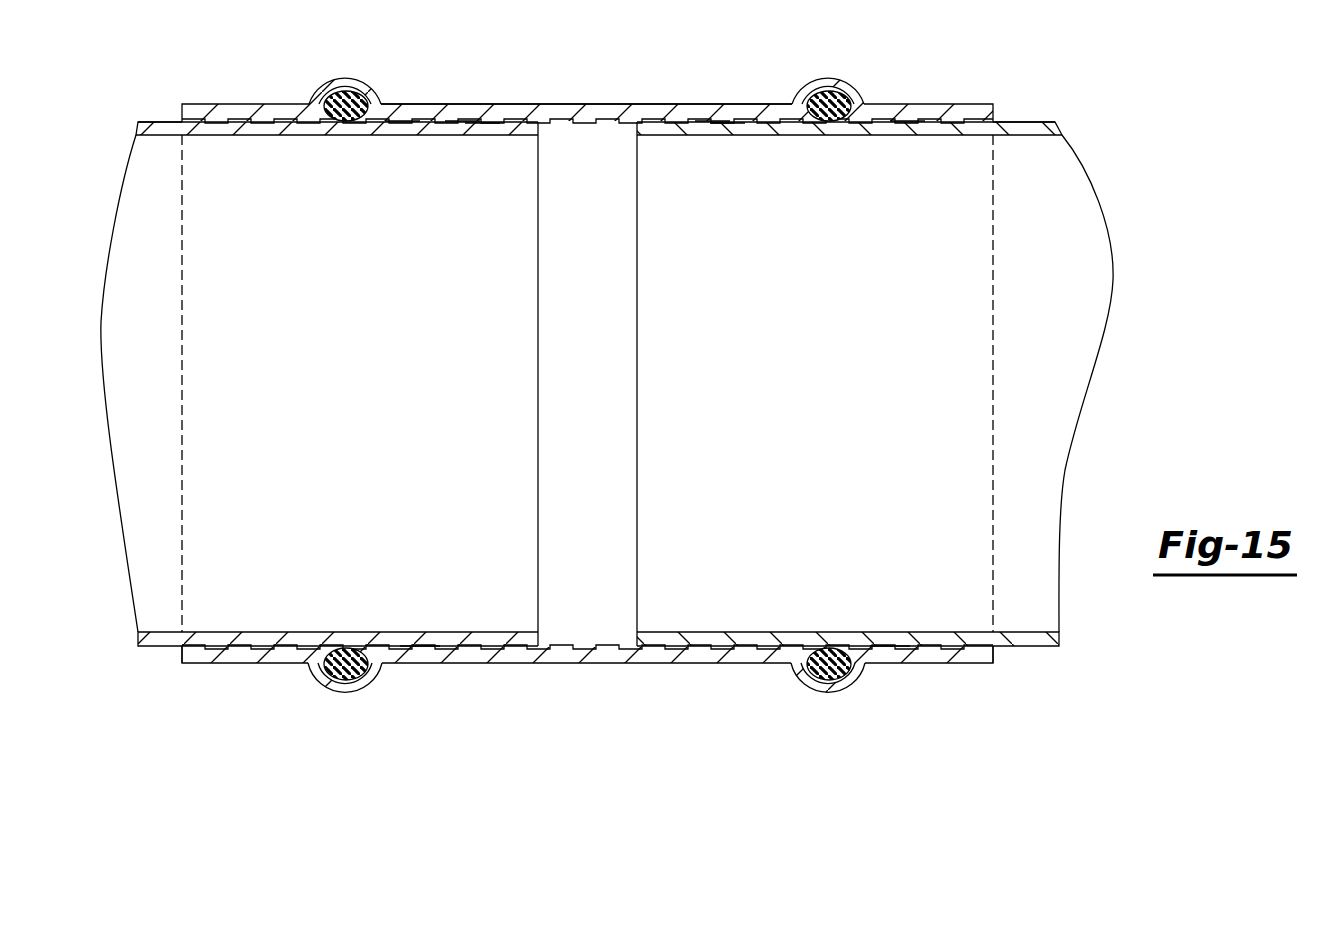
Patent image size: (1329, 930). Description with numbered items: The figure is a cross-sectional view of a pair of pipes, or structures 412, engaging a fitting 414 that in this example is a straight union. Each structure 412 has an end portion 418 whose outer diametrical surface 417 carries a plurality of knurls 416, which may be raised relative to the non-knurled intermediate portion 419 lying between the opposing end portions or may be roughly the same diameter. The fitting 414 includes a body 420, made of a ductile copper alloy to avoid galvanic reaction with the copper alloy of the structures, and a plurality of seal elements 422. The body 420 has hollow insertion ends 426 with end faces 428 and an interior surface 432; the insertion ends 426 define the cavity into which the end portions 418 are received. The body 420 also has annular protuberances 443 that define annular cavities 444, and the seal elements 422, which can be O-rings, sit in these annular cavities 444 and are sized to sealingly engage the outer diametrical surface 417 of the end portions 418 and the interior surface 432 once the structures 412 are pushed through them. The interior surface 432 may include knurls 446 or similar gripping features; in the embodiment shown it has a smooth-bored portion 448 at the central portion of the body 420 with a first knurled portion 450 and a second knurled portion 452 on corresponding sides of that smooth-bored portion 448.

The structure 412 is at (148, 656).
The fitting 414 is at (582, 94).
The knurls 416 is at (268, 648).
The outer diametrical surface 417 is at (398, 120).
The end portion 418 is at (463, 122).
The intermediate portion 419 is at (162, 121).
The body 420 is at (516, 104).
The seal element 422 is at (346, 96).
The insertion end 426 is at (192, 124).
The end face 428 is at (182, 664).
The interior surface 432 is at (212, 123).
The annular protuberance 443 is at (370, 680).
The annular cavity 444 is at (348, 124).
The knurls 446 is at (482, 124).
The smooth-bored portion 448 is at (578, 124).
The first knurled portion 450 is at (422, 636).
The second knurled portion 452 is at (884, 632).